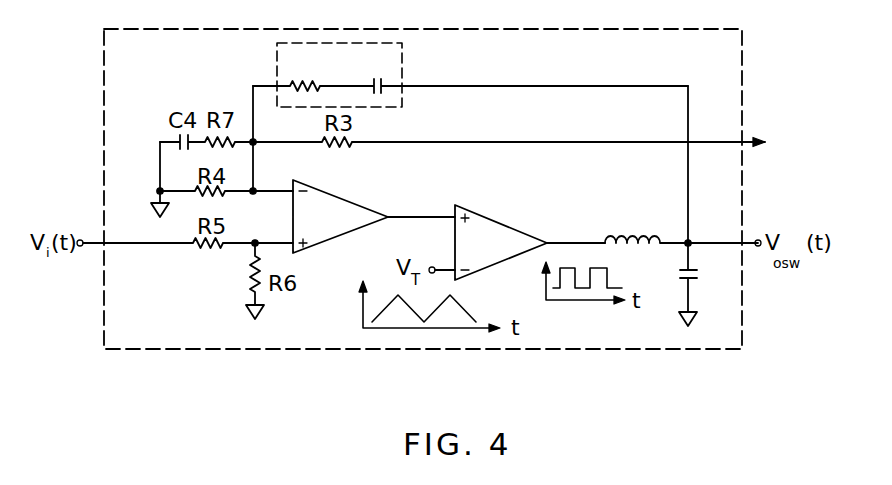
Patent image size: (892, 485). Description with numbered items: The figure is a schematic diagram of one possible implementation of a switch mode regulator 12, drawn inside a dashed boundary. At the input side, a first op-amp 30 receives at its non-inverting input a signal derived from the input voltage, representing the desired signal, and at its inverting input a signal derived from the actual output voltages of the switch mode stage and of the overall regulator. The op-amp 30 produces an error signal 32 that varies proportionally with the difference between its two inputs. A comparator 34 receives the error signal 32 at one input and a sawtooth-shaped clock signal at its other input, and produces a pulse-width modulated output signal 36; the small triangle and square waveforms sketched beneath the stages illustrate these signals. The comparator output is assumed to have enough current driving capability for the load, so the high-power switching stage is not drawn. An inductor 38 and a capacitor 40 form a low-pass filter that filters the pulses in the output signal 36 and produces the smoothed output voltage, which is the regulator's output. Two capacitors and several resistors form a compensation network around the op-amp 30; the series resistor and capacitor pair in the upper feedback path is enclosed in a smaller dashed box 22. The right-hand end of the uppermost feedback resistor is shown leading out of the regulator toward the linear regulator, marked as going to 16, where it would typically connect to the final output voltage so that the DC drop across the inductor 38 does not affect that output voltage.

The switch mode regulator 12 is at (467, 350).
The output to element 16 is at (782, 145).
The feedback network (R8, C5) 22 is at (402, 50).
The first op-amp 30 is at (340, 198).
The error signal 32 is at (420, 217).
The comparator 34 is at (505, 226).
The pulse-width modulated output signal 36 is at (562, 241).
The inductor 38 is at (620, 221).
The capacitor 40 is at (704, 272).